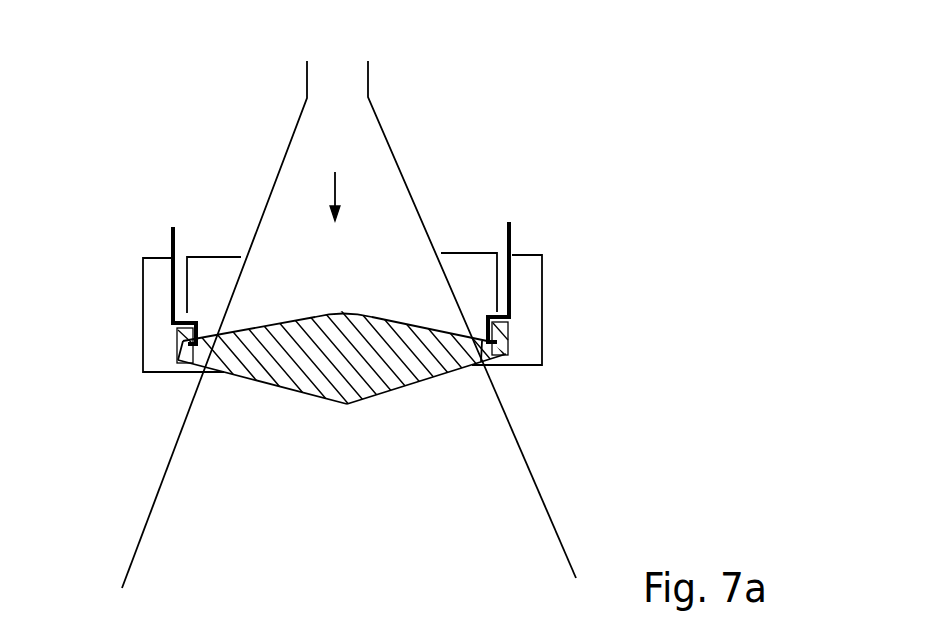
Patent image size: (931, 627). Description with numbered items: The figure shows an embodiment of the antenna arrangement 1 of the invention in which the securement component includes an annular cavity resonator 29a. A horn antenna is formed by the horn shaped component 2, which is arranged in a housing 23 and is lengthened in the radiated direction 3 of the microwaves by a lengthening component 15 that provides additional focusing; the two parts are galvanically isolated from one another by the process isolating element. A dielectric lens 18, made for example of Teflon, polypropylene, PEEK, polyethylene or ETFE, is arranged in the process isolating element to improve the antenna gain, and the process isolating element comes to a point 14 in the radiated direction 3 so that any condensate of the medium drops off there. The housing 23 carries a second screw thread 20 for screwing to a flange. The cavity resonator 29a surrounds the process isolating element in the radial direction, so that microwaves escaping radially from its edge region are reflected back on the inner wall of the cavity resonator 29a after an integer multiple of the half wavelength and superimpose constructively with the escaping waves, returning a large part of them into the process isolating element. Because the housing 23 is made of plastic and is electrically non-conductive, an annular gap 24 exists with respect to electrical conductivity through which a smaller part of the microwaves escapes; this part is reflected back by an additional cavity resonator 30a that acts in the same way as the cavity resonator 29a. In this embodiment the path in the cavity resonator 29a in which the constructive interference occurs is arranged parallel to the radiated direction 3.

The antenna arrangement 1 is at (421, 80).
The horn shaped component 2 is at (393, 148).
The radiated direction 3 is at (336, 191).
The point 14 is at (348, 418).
The lengthening component 15 is at (156, 508).
The dielectric lens 18 is at (307, 320).
The second screw thread 20 is at (173, 257).
The housing 23 is at (176, 250).
The annular gap 24 is at (210, 352).
The annular cavity resonator 29a is at (152, 374).
The additional cavity resonator 30a is at (213, 257).